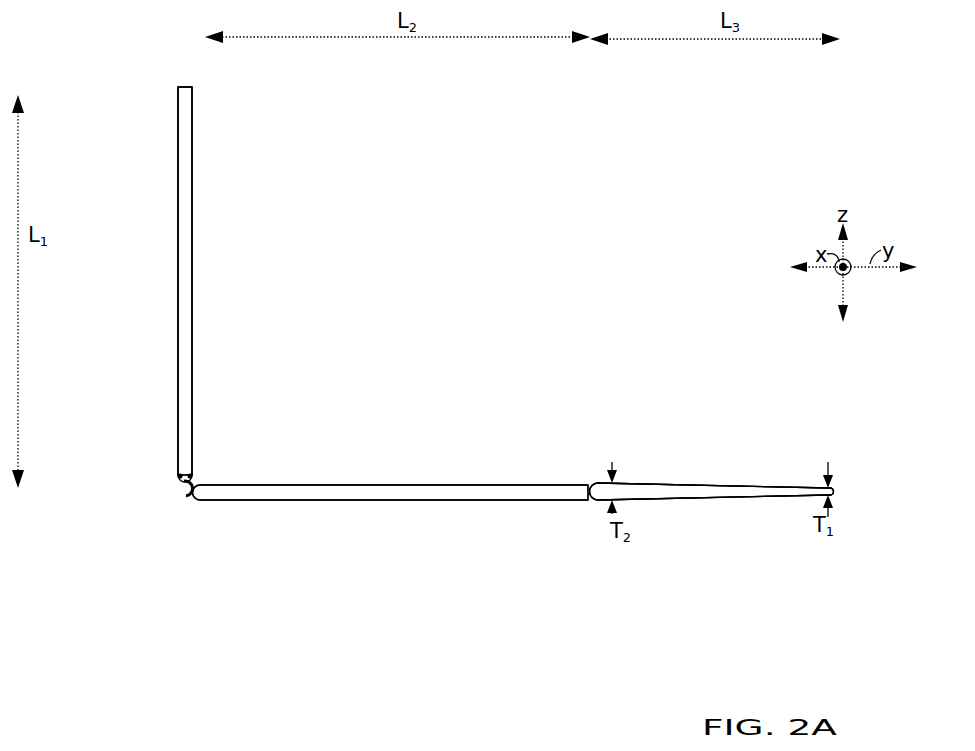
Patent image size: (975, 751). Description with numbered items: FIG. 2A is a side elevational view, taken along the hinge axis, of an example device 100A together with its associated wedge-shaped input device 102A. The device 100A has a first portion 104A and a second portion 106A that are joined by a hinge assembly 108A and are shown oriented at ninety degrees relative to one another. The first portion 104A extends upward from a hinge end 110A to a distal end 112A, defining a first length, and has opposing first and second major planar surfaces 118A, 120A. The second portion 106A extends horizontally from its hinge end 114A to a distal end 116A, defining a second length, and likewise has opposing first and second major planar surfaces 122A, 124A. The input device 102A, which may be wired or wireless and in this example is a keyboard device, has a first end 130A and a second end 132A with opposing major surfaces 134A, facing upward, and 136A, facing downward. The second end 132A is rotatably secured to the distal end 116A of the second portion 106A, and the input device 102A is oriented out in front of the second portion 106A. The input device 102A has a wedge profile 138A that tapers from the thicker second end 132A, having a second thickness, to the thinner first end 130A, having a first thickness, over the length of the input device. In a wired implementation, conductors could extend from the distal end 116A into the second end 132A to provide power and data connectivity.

The device 100A is at (728, 130).
The input device 102A is at (856, 474).
The first portion 104A is at (166, 307).
The second portion 106A is at (358, 474).
The hinge assembly 108A is at (175, 499).
The hinge end of first portion 110A is at (178, 478).
The distal end of first portion 112A is at (182, 86).
The hinge end of second portion 114A is at (194, 500).
The distal end of second portion 116A is at (588, 500).
The first surface of first portion 118A is at (253, 178).
The second surface of first portion 120A is at (177, 198).
The first surface of second portion 122A is at (505, 485).
The second surface of second portion 124A is at (443, 500).
The first end of input device 130A is at (845, 508).
The second end of input device 132A is at (598, 471).
The first surface of input device 134A is at (735, 485).
The second surface of input device 136A is at (650, 500).
The wedge profile 138A is at (727, 511).